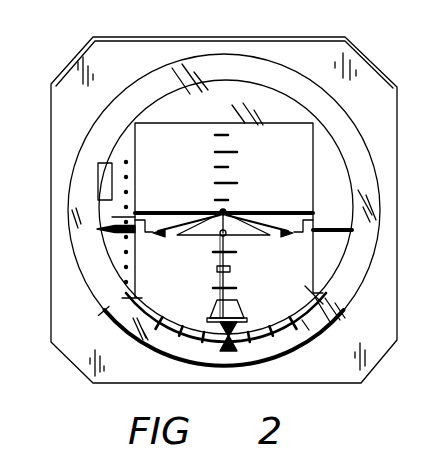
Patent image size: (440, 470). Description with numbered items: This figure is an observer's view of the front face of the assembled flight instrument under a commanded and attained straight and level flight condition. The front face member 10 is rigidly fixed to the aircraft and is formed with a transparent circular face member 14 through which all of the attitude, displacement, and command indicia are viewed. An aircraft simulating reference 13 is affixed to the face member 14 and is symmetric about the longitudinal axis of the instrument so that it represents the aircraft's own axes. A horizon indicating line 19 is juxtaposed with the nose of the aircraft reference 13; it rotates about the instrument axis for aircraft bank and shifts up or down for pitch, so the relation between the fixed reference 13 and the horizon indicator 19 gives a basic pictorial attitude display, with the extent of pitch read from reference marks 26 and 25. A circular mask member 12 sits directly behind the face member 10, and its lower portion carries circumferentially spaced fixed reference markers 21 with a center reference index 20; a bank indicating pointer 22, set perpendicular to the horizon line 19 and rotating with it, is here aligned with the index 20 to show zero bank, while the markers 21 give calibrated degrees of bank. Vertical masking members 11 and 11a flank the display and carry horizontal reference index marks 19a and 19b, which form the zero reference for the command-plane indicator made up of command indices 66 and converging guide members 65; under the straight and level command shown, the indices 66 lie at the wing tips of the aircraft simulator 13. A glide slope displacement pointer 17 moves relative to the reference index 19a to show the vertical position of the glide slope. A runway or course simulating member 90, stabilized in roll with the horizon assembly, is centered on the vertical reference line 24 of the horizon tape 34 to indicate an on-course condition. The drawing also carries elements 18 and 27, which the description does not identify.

The front face member 10 is at (373, 60).
The masking member 11 is at (124, 128).
The masking member 11a is at (322, 143).
The circular mask member 12 is at (107, 311).
The aircraft simulating reference 13 is at (204, 238).
The transparent circular face member 14 is at (168, 106).
The glide slope displacement pointer 17 is at (93, 236).
The glide slope scale 18 is at (129, 192).
The horizon indicating line 19 is at (267, 212).
The horizontal reference index mark 19a is at (96, 258).
The horizontal reference index mark 19b is at (338, 222).
The center reference index 20 is at (218, 341).
The reference markers 21 is at (275, 328).
The bank indicating pointer 22 is at (197, 333).
The vertical reference line 24 is at (230, 258).
The pitch reference marks 25 is at (215, 152).
The pitch reference marks 26 is at (233, 276).
The OFF warning flag 27 is at (95, 195).
The horizon tape 34 is at (155, 141).
The guide members 65 is at (159, 234).
The command indices 66 is at (157, 240).
The runway simulating member 90 is at (218, 308).